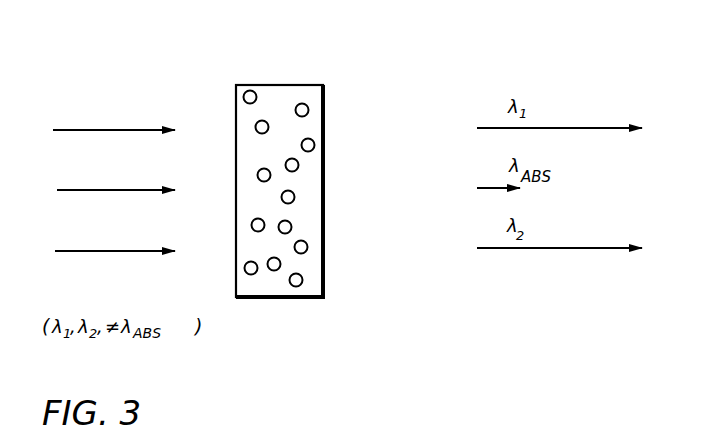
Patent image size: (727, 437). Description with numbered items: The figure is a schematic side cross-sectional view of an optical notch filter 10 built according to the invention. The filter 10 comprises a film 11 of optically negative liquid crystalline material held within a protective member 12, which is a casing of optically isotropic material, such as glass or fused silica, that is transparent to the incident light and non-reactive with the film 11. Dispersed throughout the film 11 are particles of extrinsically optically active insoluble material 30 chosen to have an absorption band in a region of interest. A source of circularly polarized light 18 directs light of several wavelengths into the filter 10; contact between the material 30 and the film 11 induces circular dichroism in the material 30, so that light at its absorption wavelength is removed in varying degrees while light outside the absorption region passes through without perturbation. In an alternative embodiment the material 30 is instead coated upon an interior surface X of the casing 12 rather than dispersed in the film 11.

The optical notch filter 10 is at (271, 183).
The film 11 is at (270, 290).
The protective member 12 is at (300, 85).
The source of circularly polarized light 18 is at (112, 67).
The extrinsically optically active insoluble material 30 is at (253, 90).
The surface X is at (310, 278).